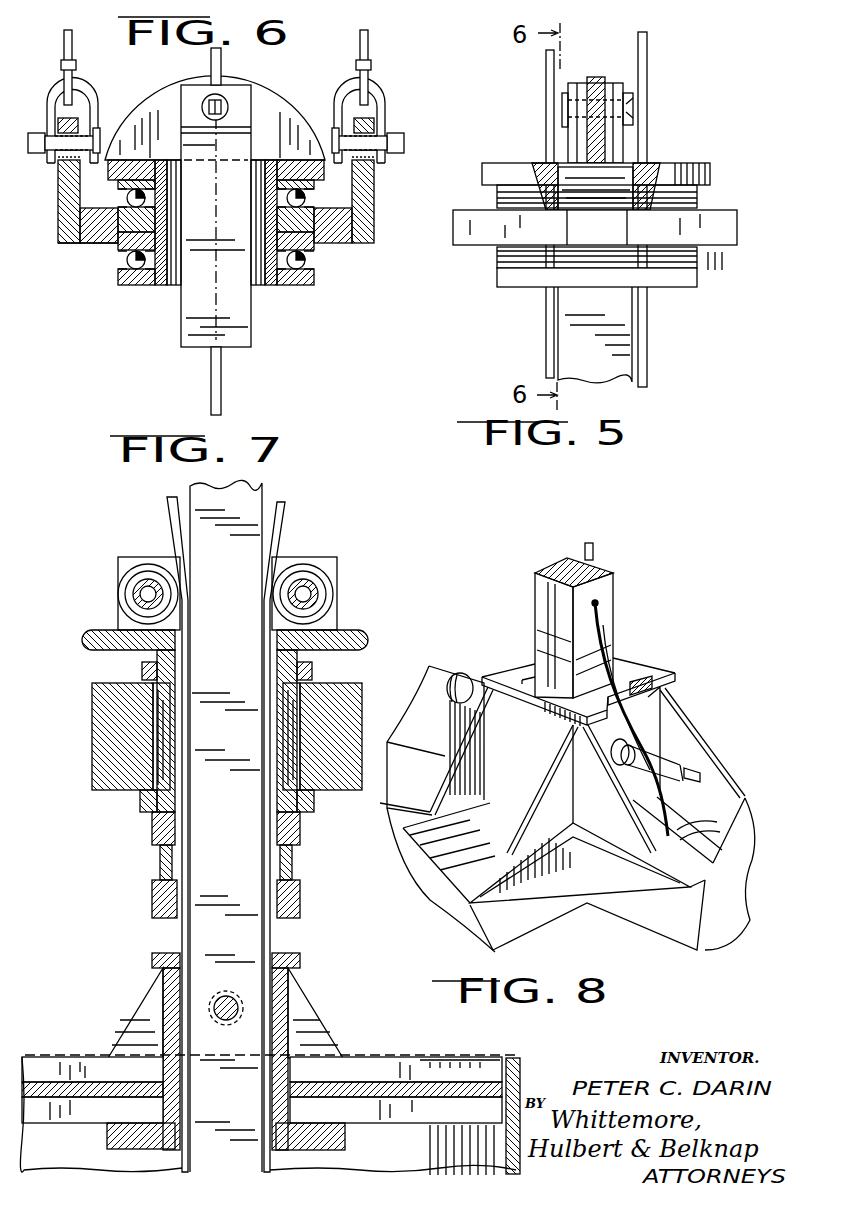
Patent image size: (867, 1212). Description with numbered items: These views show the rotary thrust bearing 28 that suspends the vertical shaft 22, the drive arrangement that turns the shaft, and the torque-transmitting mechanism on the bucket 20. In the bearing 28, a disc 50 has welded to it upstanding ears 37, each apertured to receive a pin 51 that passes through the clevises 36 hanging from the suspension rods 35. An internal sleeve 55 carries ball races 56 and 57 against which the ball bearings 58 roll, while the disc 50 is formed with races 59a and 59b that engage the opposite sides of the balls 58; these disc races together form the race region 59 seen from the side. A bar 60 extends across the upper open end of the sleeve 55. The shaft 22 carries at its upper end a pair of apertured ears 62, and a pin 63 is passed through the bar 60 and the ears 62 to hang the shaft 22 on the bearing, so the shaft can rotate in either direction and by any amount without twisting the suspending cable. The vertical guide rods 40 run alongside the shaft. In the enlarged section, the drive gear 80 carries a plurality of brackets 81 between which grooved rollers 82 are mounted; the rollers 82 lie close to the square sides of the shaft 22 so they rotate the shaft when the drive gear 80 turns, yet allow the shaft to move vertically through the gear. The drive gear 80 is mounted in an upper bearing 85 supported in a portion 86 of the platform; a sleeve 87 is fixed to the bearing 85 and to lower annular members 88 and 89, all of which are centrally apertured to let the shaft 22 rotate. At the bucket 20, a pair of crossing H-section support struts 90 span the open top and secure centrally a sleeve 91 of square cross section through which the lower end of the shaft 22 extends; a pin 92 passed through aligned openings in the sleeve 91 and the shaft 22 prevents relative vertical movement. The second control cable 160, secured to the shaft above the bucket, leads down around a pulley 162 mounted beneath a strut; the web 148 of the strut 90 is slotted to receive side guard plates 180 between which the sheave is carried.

In FIG. 7, the bucket 20 is at (521, 1077).
In FIG. 6, the vertical shaft 22 is at (238, 333).
In FIG. 5, the vertical shaft 22 is at (610, 368).
In FIG. 7, the vertical shaft 22 is at (253, 498).
In FIG. 8, the vertical shaft 22 is at (608, 615).
In FIG. 6, the bearing 28 is at (64, 249).
In FIG. 6, the suspension rod 35 is at (72, 46).
In FIG. 6, the clevises 36 is at (80, 94).
In FIG. 6, the upstanding ears 37 is at (58, 190).
In FIG. 5, the upstanding ears 37 is at (617, 233).
In FIG. 6, the guide rod / wire 40 is at (221, 385).
In FIG. 5, the guide rod / wire 40 is at (546, 322).
In FIG. 7, the guide rod / wire 40 is at (169, 512).
In FIG. 8, the guide rod / wire 40 is at (595, 556).
In FIG. 6, the disc 50 is at (345, 243).
In FIG. 5, the disc 50 is at (717, 245).
In FIG. 6, the pin 51 is at (32, 134).
In FIG. 6, the internal sleeve 55 is at (170, 287).
In FIG. 6, the ball race 56 is at (125, 278).
In FIG. 5, the ball race 56 is at (497, 276).
In FIG. 6, the ball race 57 is at (122, 178).
In FIG. 5, the ball race 57 is at (707, 188).
In FIG. 6, the ball bearings 58 is at (293, 283).
In FIG. 5, the ball bearings 58 is at (697, 208).
In FIG. 5, the spacer plate 59 is at (497, 248).
In FIG. 6, the race 59a is at (120, 208).
In FIG. 6, the race 59b is at (118, 242).
In FIG. 6, the bar 60 is at (166, 97).
In FIG. 5, the bar 60 is at (596, 77).
In FIG. 6, the apertured ears 62 is at (240, 127).
In FIG. 5, the apertured ears 62 is at (620, 153).
In FIG. 6, the pin 63 is at (227, 100).
In FIG. 5, the pin 63 is at (633, 113).
In FIG. 7, the drive gear 80 is at (365, 638).
In FIG. 7, the brackets 81 is at (158, 556).
In FIG. 7, the grooved rollers 82 is at (122, 579).
In FIG. 7, the bearing 85 is at (142, 665).
In FIG. 7, the portion of the platform 86 is at (110, 712).
In FIG. 7, the sleeve 87 is at (161, 862).
In FIG. 7, the annular member 88 is at (163, 819).
In FIG. 7, the annular member 89 is at (163, 897).
In FIG. 7, the support struts 90 is at (387, 1087).
In FIG. 8, the support struts 90 is at (652, 917).
In FIG. 7, the sleeve 91 is at (287, 1039).
In FIG. 8, the sleeve 91 is at (655, 716).
In FIG. 7, the pin 92 is at (225, 996).
In FIG. 8, the pin 92 is at (467, 674).
In FIG. 7, the web 148 is at (59, 1080).
In FIG. 8, the web 148 is at (415, 716).
In FIG. 8, the second control cable 160 is at (623, 662).
In FIG. 8, the pulley 162 is at (720, 856).
In FIG. 8, the side guard plates 180 is at (743, 846).